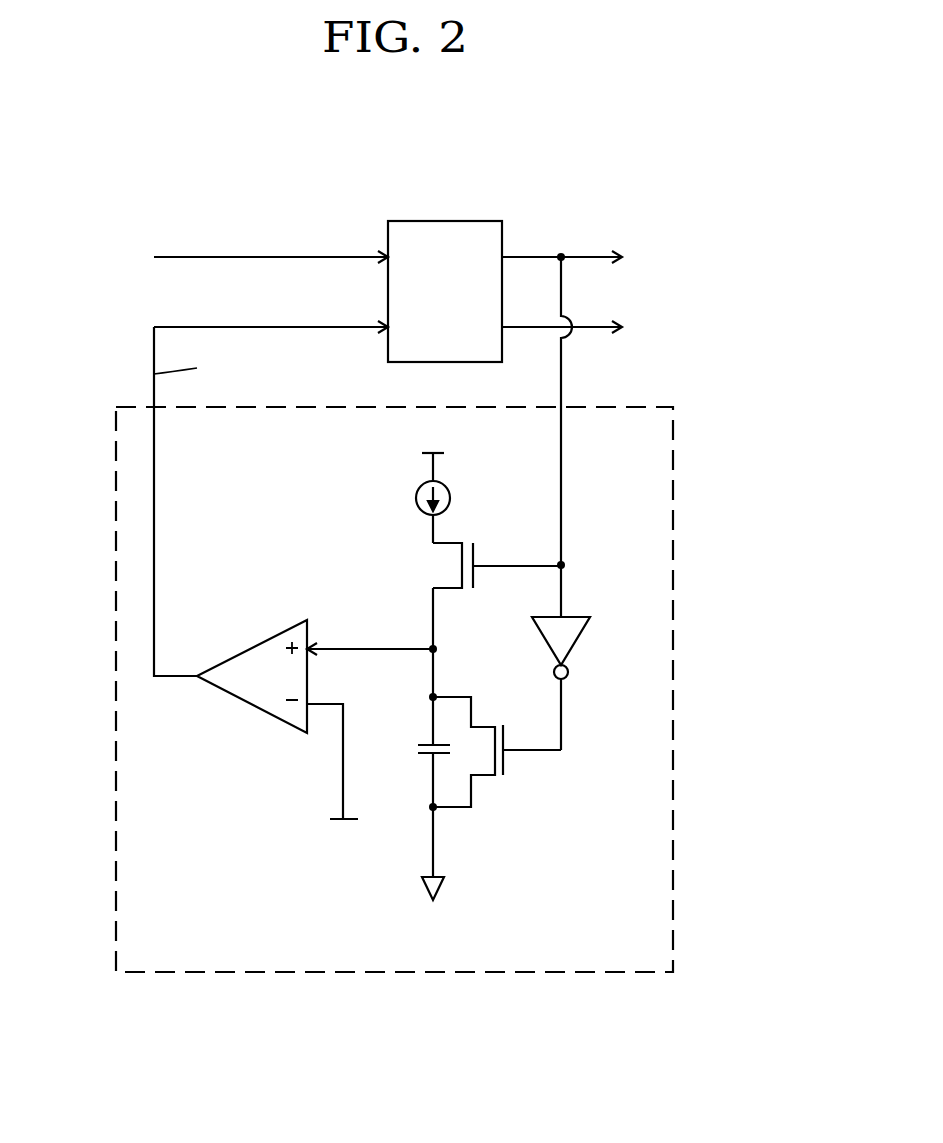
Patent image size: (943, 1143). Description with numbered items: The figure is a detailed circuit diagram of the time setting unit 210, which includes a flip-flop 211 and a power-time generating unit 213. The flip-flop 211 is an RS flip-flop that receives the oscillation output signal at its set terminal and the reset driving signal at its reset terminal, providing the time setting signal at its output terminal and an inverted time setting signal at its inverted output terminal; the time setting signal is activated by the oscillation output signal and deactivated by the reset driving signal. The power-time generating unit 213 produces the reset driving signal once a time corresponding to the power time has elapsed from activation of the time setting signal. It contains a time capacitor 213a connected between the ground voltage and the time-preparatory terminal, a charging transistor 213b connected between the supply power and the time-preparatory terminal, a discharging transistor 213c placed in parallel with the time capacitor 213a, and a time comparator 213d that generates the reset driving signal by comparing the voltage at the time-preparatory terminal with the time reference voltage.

The time setting unit 210 is at (705, 207).
The flip-flop 211 is at (445, 221).
The power-time generating unit 213 is at (673, 462).
The time capacitor 213a is at (412, 747).
The charging transistor 213b is at (433, 567).
The discharging transistor 213c is at (508, 778).
The time comparator 213d is at (252, 645).